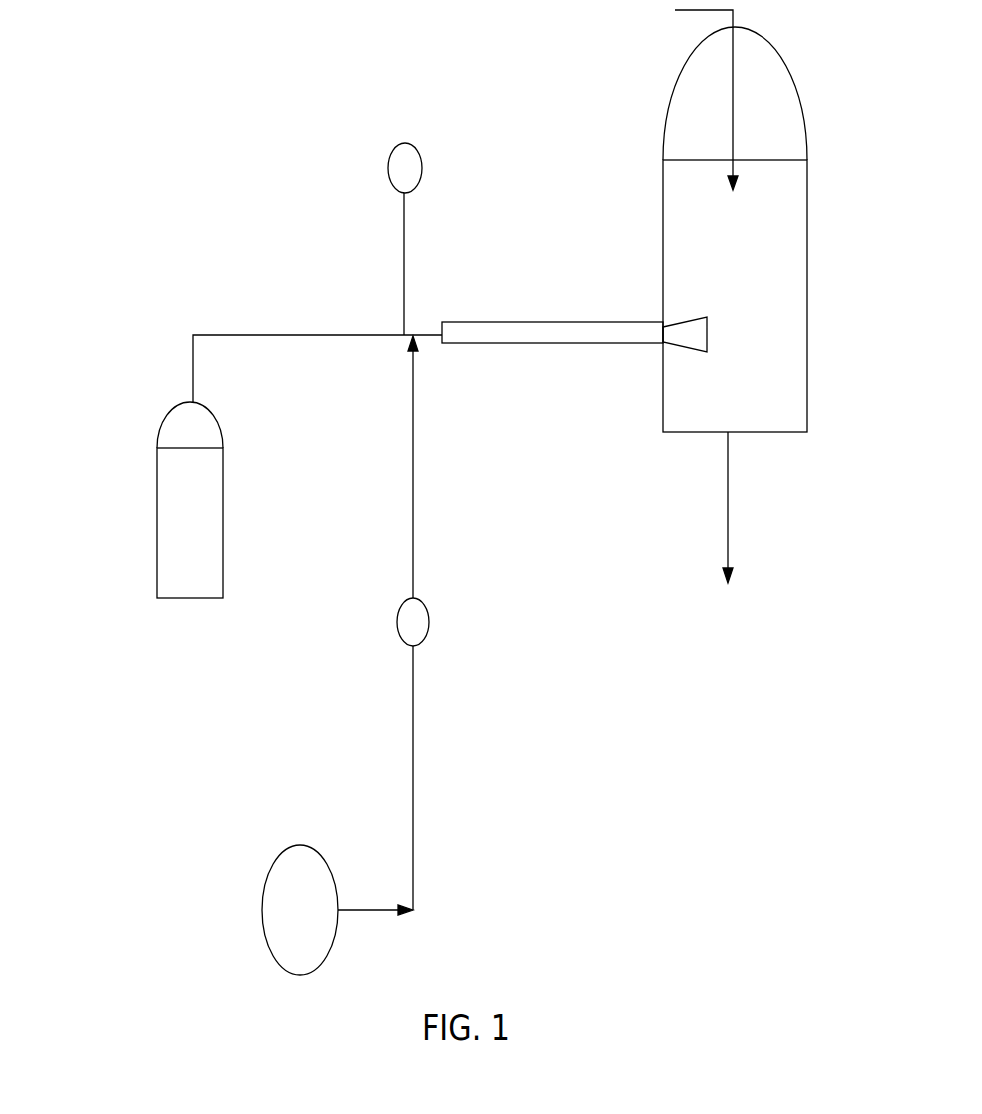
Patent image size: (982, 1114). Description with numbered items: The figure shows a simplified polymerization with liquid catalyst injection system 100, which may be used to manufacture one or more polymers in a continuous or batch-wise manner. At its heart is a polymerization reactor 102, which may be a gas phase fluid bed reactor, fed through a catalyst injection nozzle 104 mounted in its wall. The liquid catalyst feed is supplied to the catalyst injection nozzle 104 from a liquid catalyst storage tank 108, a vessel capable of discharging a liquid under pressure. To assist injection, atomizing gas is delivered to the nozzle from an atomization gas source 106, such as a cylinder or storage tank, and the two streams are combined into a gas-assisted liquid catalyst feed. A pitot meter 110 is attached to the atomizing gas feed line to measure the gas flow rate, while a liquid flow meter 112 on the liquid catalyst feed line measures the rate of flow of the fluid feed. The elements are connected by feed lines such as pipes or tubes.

The polymerization with liquid catalyst injection system 100 is at (122, 816).
The polymerization reactor 102 is at (808, 296).
The catalyst injection nozzle 104 is at (553, 322).
The atomization gas source 106 is at (300, 845).
The liquid catalyst storage tank 108 is at (224, 523).
The pitot meter 110 is at (422, 166).
The liquid flow meter 112 is at (430, 620).